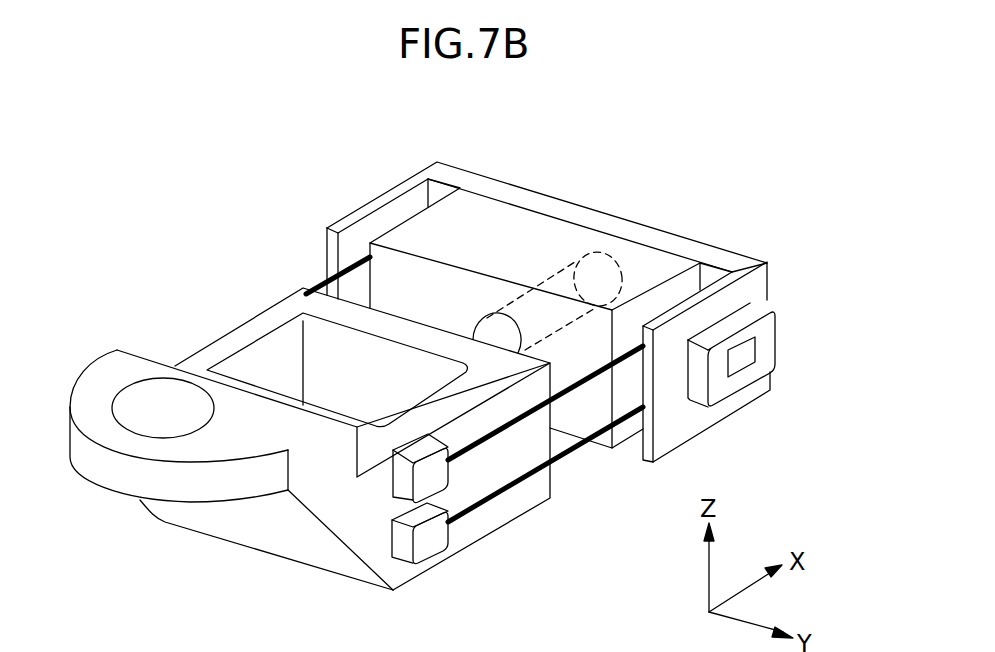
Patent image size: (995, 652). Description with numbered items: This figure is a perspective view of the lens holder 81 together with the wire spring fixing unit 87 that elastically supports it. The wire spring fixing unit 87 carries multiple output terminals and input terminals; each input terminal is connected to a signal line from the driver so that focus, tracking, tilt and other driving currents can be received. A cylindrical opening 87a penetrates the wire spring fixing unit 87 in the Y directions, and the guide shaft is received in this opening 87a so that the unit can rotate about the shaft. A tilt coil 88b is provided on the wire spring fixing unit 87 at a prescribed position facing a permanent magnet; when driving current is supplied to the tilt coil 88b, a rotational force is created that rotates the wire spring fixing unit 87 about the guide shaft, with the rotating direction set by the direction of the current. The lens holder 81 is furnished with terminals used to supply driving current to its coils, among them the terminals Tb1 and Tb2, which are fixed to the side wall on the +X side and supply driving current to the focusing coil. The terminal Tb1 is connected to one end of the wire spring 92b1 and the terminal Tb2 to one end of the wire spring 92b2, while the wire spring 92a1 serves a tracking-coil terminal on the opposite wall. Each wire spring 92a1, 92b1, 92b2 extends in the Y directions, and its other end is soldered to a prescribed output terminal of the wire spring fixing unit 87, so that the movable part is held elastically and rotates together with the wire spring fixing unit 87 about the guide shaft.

The lens holder 81 is at (117, 351).
The wire spring fixing unit 87 is at (604, 212).
The cylindrical opening 87a is at (517, 325).
The tilt coil 88b is at (764, 303).
The wire spring 92a1 is at (313, 290).
The wire spring 92b1 is at (563, 395).
The wire spring 92b2 is at (510, 487).
The terminal Tb1 is at (392, 490).
The terminal Tb2 is at (433, 560).